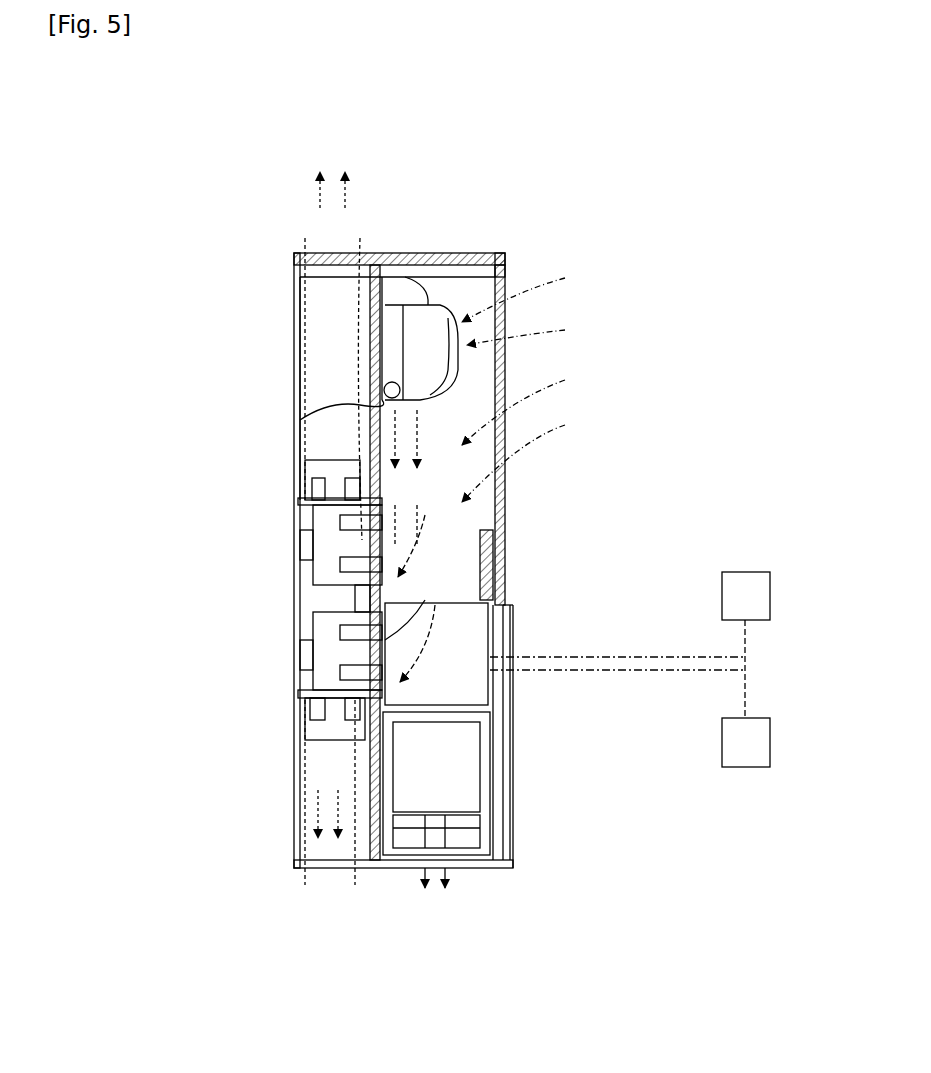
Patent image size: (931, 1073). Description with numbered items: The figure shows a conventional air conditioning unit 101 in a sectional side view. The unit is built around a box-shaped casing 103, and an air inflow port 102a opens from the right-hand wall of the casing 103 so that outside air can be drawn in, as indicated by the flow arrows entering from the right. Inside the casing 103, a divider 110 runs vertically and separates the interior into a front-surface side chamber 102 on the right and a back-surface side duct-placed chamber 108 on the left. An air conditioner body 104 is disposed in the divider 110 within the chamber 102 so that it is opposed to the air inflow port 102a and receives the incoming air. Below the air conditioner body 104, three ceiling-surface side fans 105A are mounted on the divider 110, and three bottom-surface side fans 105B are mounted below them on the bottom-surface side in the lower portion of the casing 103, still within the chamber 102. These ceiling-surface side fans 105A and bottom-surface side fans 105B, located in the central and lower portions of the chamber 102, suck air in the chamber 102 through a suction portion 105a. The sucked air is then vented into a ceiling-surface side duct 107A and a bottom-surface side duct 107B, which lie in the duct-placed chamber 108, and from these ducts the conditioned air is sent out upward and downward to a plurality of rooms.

The air conditioning unit 101 is at (488, 244).
The front-surface side chamber 102 is at (485, 498).
The air inflow port 102a is at (505, 350).
The box-shaped casing 103 is at (300, 386).
The air conditioner body 104 is at (418, 300).
The ceiling-surface side fans 105A is at (313, 565).
The bottom-surface side fans 105B is at (313, 625).
The suction portion 105a is at (543, 803).
The ceiling-surface side duct 107A is at (300, 290).
The bottom-surface side duct 107B is at (298, 778).
The back-surface side duct-placed chamber 108 is at (315, 345).
The divider 110 is at (300, 420).